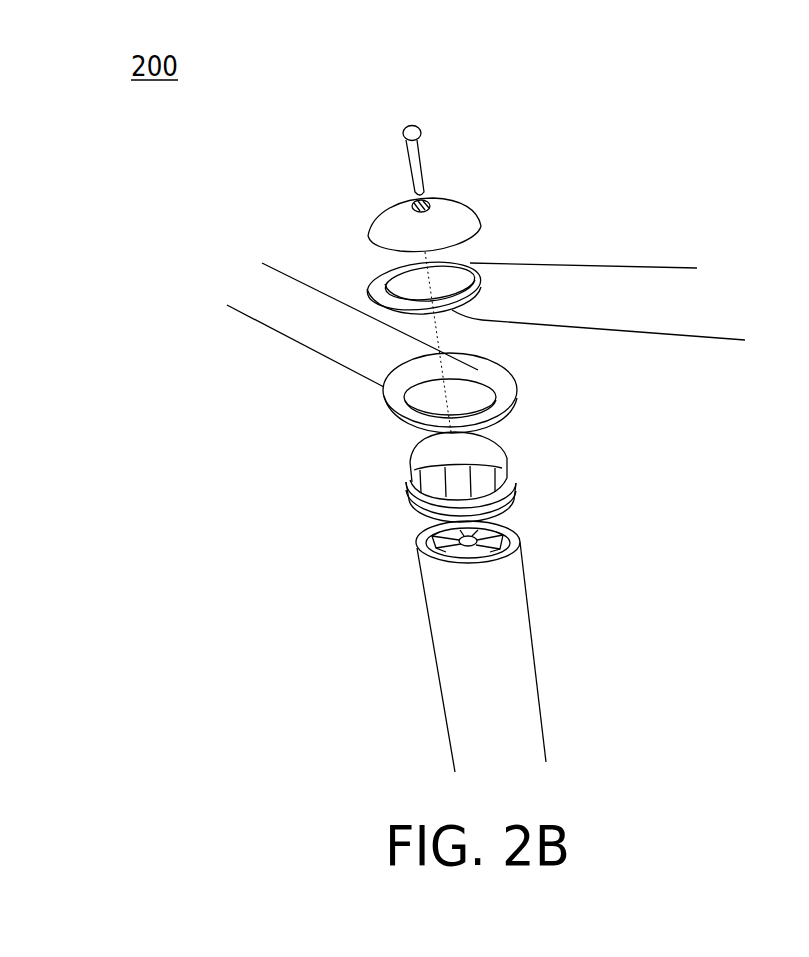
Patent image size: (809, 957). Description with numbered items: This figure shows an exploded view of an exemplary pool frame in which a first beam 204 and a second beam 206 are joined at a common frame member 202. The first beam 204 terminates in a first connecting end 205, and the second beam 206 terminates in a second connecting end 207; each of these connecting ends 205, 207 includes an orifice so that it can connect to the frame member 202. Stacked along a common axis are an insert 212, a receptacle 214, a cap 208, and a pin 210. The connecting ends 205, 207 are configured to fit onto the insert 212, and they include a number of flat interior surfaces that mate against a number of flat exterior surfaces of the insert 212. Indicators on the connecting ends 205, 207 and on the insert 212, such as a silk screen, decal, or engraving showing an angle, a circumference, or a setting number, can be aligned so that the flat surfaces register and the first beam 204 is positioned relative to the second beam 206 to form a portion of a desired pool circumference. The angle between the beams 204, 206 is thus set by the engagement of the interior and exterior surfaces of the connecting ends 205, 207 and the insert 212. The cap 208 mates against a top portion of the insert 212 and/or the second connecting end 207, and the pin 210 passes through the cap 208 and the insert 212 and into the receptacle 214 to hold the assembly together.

The frame member 202 is at (430, 655).
The first beam 204 is at (279, 348).
The first connecting end 205 is at (515, 403).
The second beam 206 is at (562, 263).
The second connecting end 207 is at (380, 268).
The cap 208 is at (452, 202).
The pin 210 is at (408, 172).
The insert 212 is at (408, 481).
The receptacle 214 is at (515, 528).